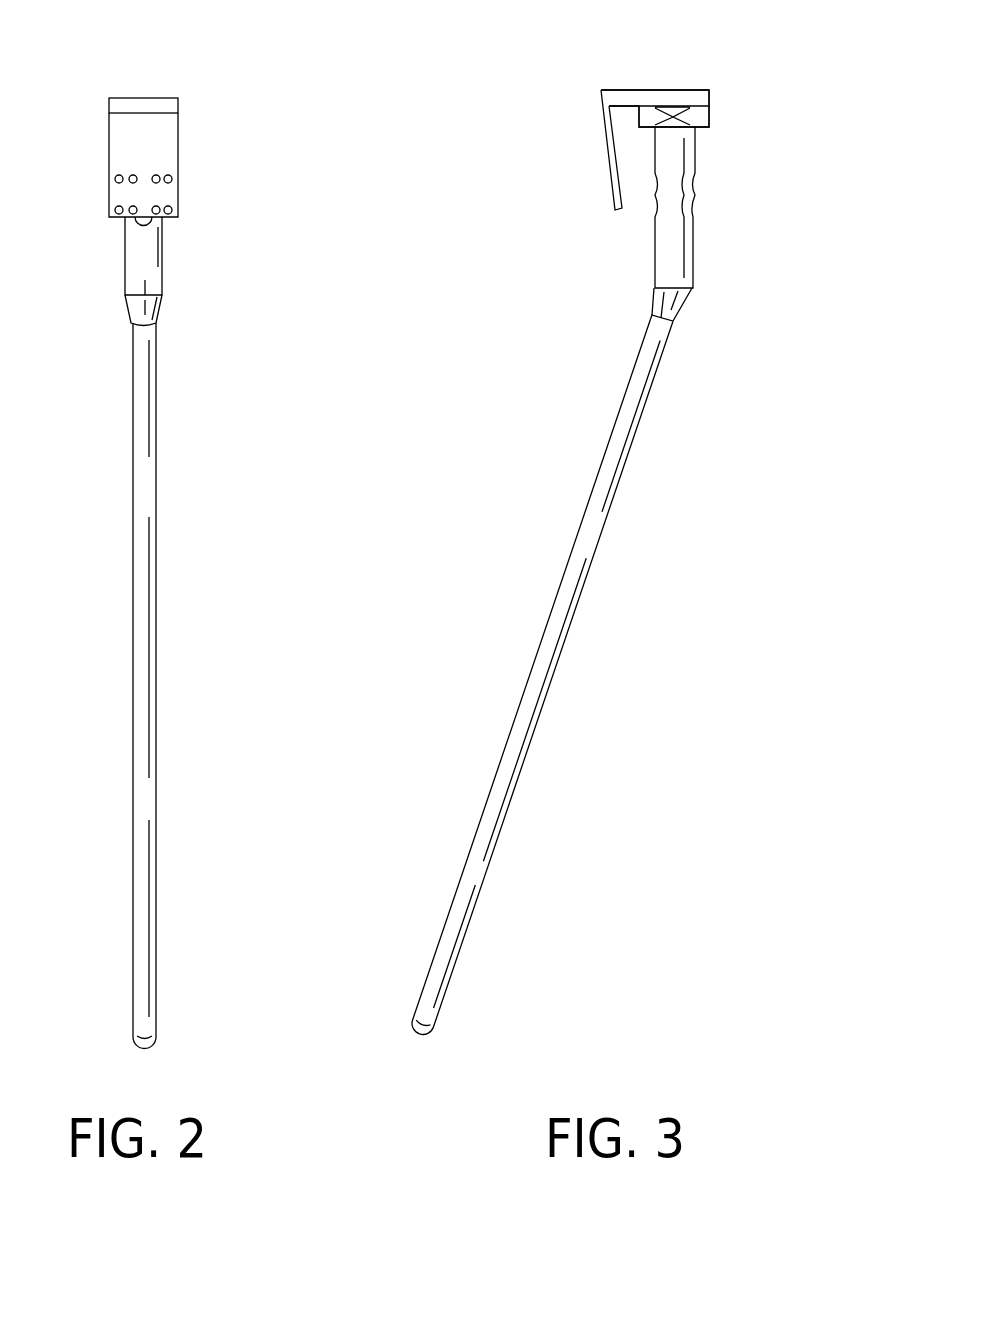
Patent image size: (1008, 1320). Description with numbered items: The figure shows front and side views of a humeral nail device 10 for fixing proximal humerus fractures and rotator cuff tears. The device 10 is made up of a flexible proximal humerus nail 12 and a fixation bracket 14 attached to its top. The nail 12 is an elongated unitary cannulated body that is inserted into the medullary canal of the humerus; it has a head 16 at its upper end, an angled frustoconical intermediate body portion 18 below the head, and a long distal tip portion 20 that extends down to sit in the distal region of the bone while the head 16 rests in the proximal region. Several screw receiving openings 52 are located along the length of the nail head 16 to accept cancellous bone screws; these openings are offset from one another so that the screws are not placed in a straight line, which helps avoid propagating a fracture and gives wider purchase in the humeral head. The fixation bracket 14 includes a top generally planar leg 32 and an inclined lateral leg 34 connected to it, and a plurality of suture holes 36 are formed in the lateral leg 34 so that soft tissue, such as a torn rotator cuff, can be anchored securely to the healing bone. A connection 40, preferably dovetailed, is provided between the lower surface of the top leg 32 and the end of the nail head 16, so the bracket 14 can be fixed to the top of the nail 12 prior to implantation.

In FIG. 2, the humeral nail device 10 is at (185, 594).
In FIG. 3, the humeral nail device 10 is at (602, 614).
In FIG. 2, the flexible proximal humerus nail 12 is at (152, 487).
In FIG. 3, the flexible proximal humerus nail 12 is at (594, 539).
In FIG. 3, the fixation bracket 14 is at (716, 82).
In FIG. 2, the head 16 is at (145, 267).
In FIG. 3, the head 16 is at (676, 248).
In FIG. 2, the angled frustoconical intermediate body portion 18 is at (150, 310).
In FIG. 3, the angled frustoconical intermediate body portion 18 is at (672, 305).
In FIG. 2, the distal tip portion 20 is at (152, 808).
In FIG. 3, the distal tip portion 20 is at (472, 880).
In FIG. 2, the top generally planar leg 32 is at (138, 98).
In FIG. 3, the top generally planar leg 32 is at (635, 90).
In FIG. 2, the inclined lateral leg 34 is at (155, 145).
In FIG. 3, the inclined lateral leg 34 is at (612, 157).
In FIG. 2, the suture holes 36 is at (170, 207).
In FIG. 3, the connection 40 is at (727, 122).
In FIG. 2, the screw receiving openings 52 is at (135, 223).
In FIG. 3, the screw receiving openings 52 is at (690, 180).